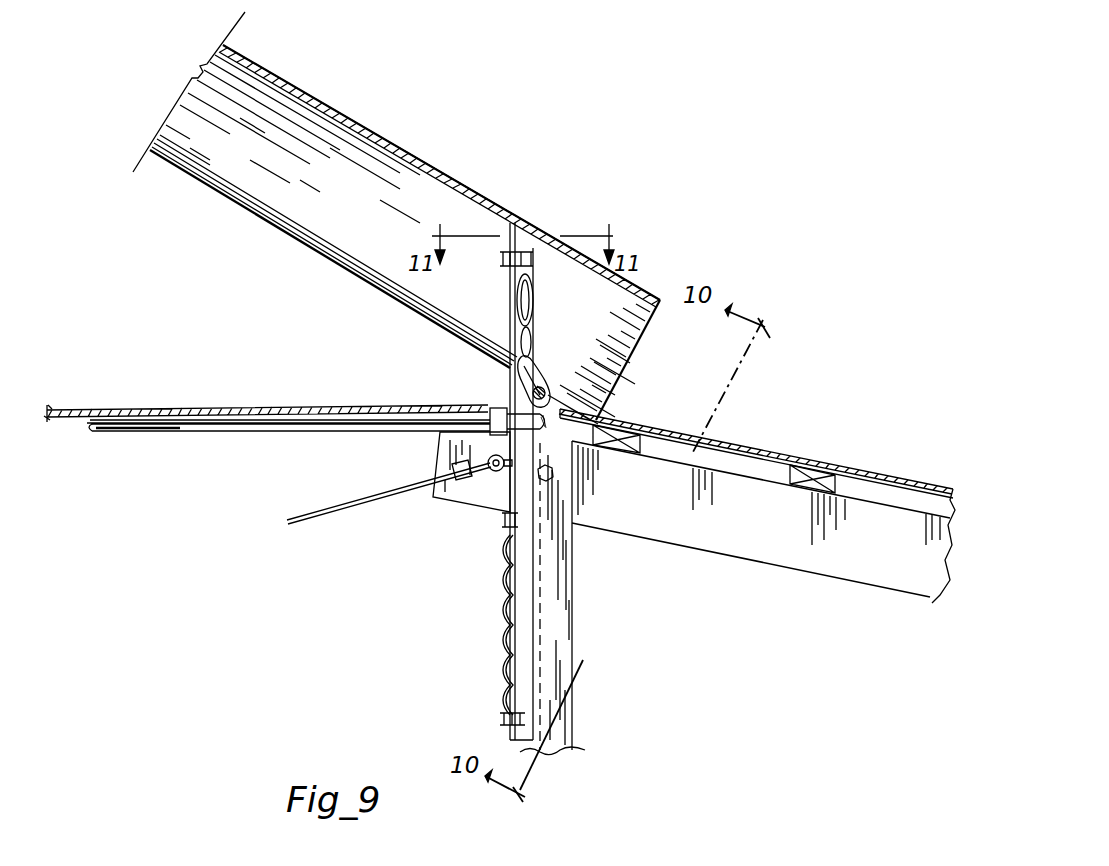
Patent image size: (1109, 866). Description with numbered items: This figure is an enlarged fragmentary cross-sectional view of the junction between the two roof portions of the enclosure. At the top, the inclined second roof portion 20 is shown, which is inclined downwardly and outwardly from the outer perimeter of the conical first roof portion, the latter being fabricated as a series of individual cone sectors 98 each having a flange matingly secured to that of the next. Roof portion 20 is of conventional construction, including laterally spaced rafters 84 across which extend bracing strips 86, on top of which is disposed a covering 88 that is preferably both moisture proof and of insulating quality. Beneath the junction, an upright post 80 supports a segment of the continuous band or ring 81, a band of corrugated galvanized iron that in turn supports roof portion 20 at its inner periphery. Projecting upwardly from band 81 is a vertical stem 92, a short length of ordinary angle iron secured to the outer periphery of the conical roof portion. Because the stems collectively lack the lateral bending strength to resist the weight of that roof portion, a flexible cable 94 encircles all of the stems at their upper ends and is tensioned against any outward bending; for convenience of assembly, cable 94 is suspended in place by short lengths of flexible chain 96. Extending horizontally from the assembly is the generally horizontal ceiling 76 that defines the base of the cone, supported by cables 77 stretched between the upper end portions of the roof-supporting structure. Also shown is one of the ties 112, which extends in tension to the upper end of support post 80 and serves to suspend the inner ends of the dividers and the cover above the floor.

The second portion of roof 20 is at (445, 165).
The cone sectors 98 is at (473, 188).
The flexible chain 96 is at (533, 310).
The flexible cable 94 is at (540, 382).
The ceiling 76 is at (283, 407).
The cables 77 is at (271, 432).
The ties 112 is at (325, 512).
The continuous band or ring 81 is at (498, 570).
The vertical stems 92 is at (522, 657).
The upright posts 80 is at (553, 630).
The rafters 84 is at (815, 545).
The bracing strips 86 is at (627, 478).
The covering 88 is at (763, 453).